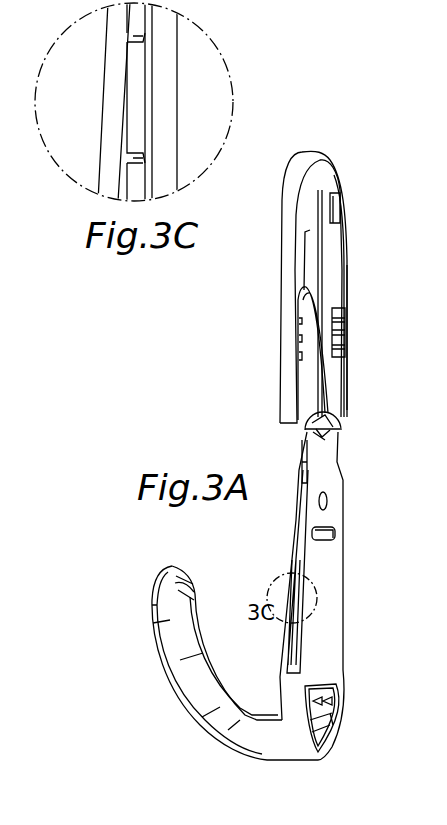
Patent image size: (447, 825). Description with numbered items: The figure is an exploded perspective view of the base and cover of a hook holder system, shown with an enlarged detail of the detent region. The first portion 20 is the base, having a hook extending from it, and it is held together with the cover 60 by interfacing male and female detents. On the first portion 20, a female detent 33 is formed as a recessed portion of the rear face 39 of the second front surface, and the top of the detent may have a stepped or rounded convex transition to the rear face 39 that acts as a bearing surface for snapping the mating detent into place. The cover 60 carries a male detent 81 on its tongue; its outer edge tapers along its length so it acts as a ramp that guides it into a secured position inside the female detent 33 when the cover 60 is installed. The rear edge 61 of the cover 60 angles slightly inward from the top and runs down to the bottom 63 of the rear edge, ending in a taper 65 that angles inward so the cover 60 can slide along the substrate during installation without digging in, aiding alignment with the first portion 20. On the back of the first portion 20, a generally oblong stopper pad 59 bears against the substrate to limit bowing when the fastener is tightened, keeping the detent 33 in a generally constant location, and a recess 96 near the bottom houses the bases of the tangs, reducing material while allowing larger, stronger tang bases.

In FIG. 3A, the first portion 20 is at (284, 605).
In FIG. 3C, the female detent 33 is at (130, 93).
In FIG. 3C, the rear face 39 is at (133, 175).
In FIG. 3A, the rear face 39 is at (290, 660).
In FIG. 3A, the stopper pad 59 is at (336, 535).
In FIG. 3A, the cover 60 is at (343, 152).
In FIG. 3A, the rear edge 61 is at (347, 265).
In FIG. 3A, the bottom of rear edge 63 is at (321, 437).
In FIG. 3A, the taper 65 is at (341, 424).
In FIG. 3A, the male detent 81 is at (337, 341).
In FIG. 3A, the recess 96 is at (336, 698).